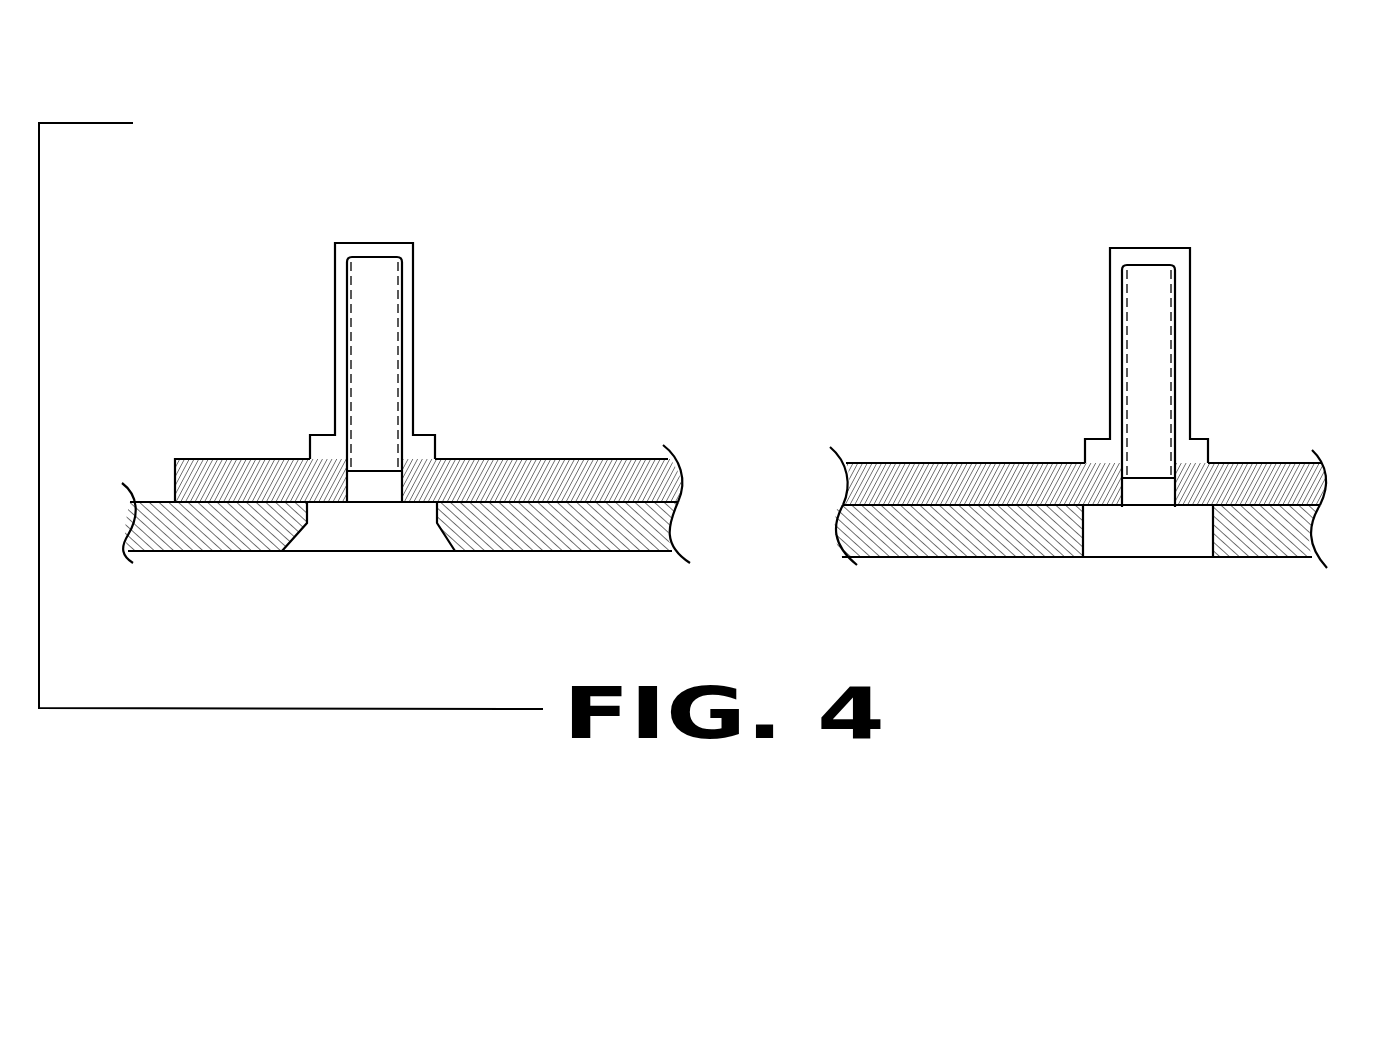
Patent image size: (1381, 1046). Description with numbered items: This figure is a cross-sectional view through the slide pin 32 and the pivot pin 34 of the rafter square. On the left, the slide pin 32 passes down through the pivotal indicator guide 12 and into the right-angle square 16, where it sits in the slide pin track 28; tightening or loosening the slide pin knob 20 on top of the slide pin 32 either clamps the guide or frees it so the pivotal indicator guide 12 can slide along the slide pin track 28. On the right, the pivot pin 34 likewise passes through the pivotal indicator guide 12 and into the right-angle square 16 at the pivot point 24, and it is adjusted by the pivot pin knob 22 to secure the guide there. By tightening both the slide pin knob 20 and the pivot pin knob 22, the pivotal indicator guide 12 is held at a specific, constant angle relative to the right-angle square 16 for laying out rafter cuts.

The pivotal indicator guide 12 is at (503, 460).
The right-angle square 16 is at (210, 552).
The slide pin knob 20 is at (335, 257).
The pivot pin knob 22 is at (1108, 284).
The pivot point 24 is at (1152, 558).
The slide pin track 28 is at (392, 552).
The slide pin 32 is at (365, 367).
The pivot pin 34 is at (1140, 377).